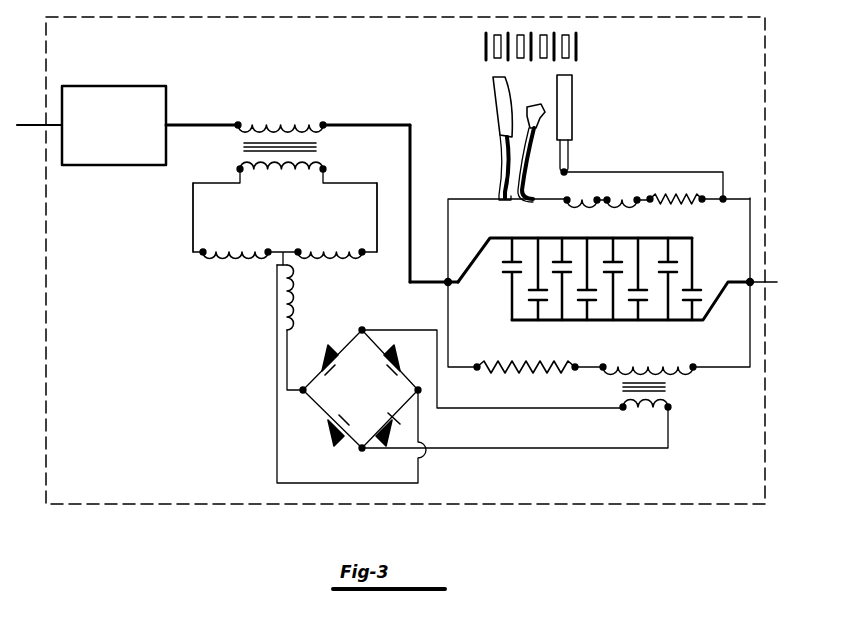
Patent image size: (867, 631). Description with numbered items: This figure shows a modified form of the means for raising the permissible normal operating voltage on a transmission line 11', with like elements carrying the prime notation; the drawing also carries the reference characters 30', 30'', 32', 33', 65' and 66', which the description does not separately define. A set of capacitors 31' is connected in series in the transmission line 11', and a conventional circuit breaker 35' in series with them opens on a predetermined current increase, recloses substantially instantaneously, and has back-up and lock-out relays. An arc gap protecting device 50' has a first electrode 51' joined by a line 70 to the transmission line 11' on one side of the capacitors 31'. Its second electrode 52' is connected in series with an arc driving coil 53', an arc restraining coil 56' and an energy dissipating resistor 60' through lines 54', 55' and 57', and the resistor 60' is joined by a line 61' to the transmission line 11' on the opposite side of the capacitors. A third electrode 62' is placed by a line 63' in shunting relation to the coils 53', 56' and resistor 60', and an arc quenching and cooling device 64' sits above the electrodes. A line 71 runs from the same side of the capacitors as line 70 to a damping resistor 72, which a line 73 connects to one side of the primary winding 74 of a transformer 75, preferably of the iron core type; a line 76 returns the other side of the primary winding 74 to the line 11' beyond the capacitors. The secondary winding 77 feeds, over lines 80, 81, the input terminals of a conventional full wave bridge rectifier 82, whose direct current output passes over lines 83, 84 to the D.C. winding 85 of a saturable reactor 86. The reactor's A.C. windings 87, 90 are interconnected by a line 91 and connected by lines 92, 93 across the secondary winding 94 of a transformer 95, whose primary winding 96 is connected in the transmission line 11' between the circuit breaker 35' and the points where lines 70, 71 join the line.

The transmission line 11' is at (401, 190).
The power supply unit enclosure 30' is at (405, 280).
The power supply unit 30'' is at (245, 622).
The set of capacitors 31' is at (630, 277).
The capacitors 32' is at (590, 265).
The capacitors 33' is at (615, 291).
The circuit breaker 35' is at (114, 110).
The arc gap protecting device 50' is at (470, 138).
The first electrode 51' is at (488, 167).
The second electrode 52' is at (538, 153).
The arc driving coil 53' is at (580, 192).
The line 54' is at (592, 140).
The line 55' is at (611, 169).
The arc restraining coil 56' is at (622, 192).
The line 57' is at (651, 172).
The energy dissipating resistor 60' is at (676, 212).
The line 61' is at (726, 213).
The third electrode 62' is at (590, 125).
The line 63' is at (645, 173).
The arc quenching and cooling device 64' is at (569, 48).
The comb teeth 65' is at (524, 24).
The comb teeth 66' is at (524, 72).
The line 70 is at (463, 199).
The line 71 is at (444, 298).
The damping resistor 72 is at (530, 364).
The line 73 is at (584, 374).
The primary winding 74 is at (635, 368).
The transformer 75 is at (672, 390).
The line 76 is at (749, 342).
The secondary winding 77 is at (661, 412).
The line 80 is at (548, 408).
The line 81 is at (584, 448).
The bridge rectifier 82 is at (356, 373).
The line 83 is at (292, 362).
The line 84 is at (276, 460).
The D.C. winding 85 is at (298, 291).
The saturable reactor 86 is at (266, 270).
The A.C. winding 87 is at (242, 250).
The A.C. winding 90 is at (338, 250).
The line 91 is at (284, 244).
The line 92 is at (192, 216).
The line 93 is at (377, 225).
The secondary winding 94 is at (288, 170).
The transformer 95 is at (320, 148).
The primary winding 96 is at (296, 103).